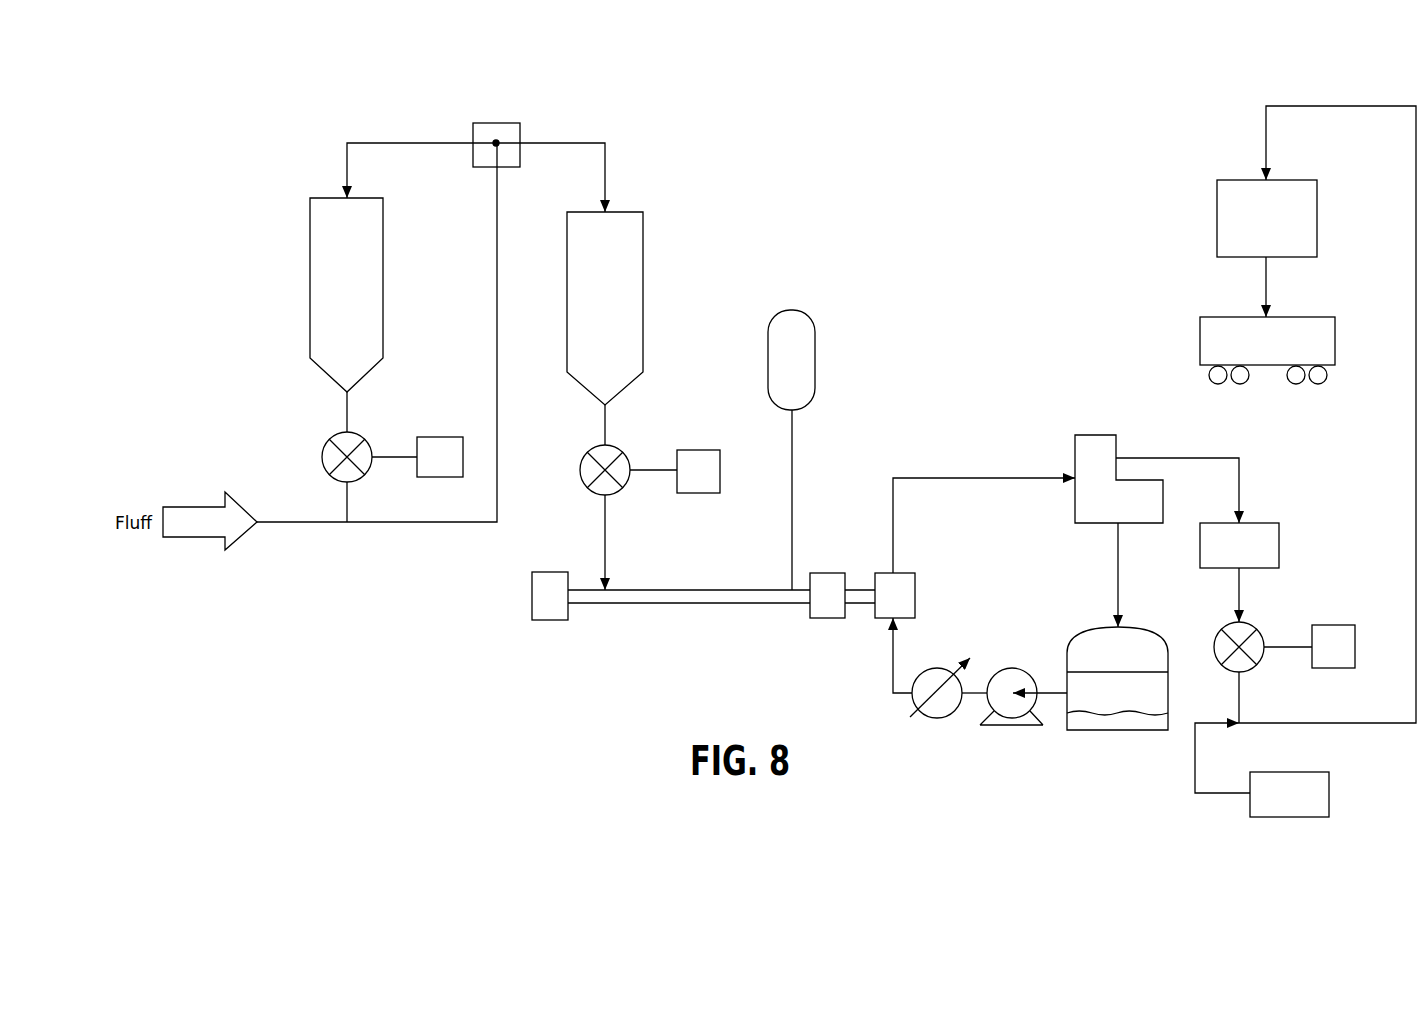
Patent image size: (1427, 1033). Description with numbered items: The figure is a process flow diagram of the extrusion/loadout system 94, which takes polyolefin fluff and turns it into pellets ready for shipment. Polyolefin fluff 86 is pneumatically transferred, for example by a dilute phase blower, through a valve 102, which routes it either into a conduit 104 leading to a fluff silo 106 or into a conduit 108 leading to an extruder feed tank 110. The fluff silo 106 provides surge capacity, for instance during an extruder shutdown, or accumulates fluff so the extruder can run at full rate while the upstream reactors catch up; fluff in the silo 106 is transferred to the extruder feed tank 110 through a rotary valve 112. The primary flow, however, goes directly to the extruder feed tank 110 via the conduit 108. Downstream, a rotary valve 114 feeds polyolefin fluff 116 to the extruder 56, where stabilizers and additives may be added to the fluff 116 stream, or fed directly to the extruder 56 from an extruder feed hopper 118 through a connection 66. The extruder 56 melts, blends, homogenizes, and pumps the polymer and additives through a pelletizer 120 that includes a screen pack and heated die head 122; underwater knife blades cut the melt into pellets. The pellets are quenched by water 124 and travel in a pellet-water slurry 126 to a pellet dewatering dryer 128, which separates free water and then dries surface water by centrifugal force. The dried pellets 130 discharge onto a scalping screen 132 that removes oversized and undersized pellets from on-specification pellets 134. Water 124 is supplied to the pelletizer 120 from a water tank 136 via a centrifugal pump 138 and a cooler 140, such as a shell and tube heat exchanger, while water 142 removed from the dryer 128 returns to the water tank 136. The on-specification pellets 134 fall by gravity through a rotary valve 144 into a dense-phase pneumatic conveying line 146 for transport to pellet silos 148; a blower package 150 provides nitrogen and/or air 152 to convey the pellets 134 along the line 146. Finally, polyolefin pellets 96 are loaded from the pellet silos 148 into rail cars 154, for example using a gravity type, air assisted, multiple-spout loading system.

The extruder 56 is at (636, 590).
The connection 66 is at (793, 505).
The polyolefin fluff 86 is at (378, 522).
The extrusion/loadout system 94 is at (930, 93).
The polyolefin pellets 96 is at (1268, 290).
The valve 102 is at (505, 123).
The conduit 104 is at (377, 143).
The fluff silo 106 is at (378, 198).
The conduit 108 is at (605, 165).
The extruder feed tank 110 is at (633, 212).
The rotary valve 112 is at (357, 434).
The rotary valve 114 is at (615, 449).
The polyolefin fluff 116 is at (606, 538).
The extruder feed hopper 118 is at (815, 320).
The pelletizer 120 is at (909, 573).
The heated die head 122 is at (822, 573).
The water 124 is at (895, 650).
The pellet-water slurry 126 is at (950, 478).
The pellet dewatering dryer 128 is at (1092, 435).
The dried pellets 130 is at (1238, 458).
The scalping screen 132 is at (1265, 523).
The on-specification pellets 134 is at (1241, 592).
The water tank 136 is at (1103, 731).
The centrifugal pump 138 is at (1003, 670).
The cooler 140 is at (930, 716).
The water 142 is at (1120, 562).
The rotary valve 144 is at (1258, 627).
The pneumatic conveying line 146 is at (1348, 723).
The pellet silos 148 is at (1308, 180).
The blower package 150 is at (1315, 772).
The nitrogen and/or air 152 is at (1196, 772).
The rail cars 154 is at (1308, 317).